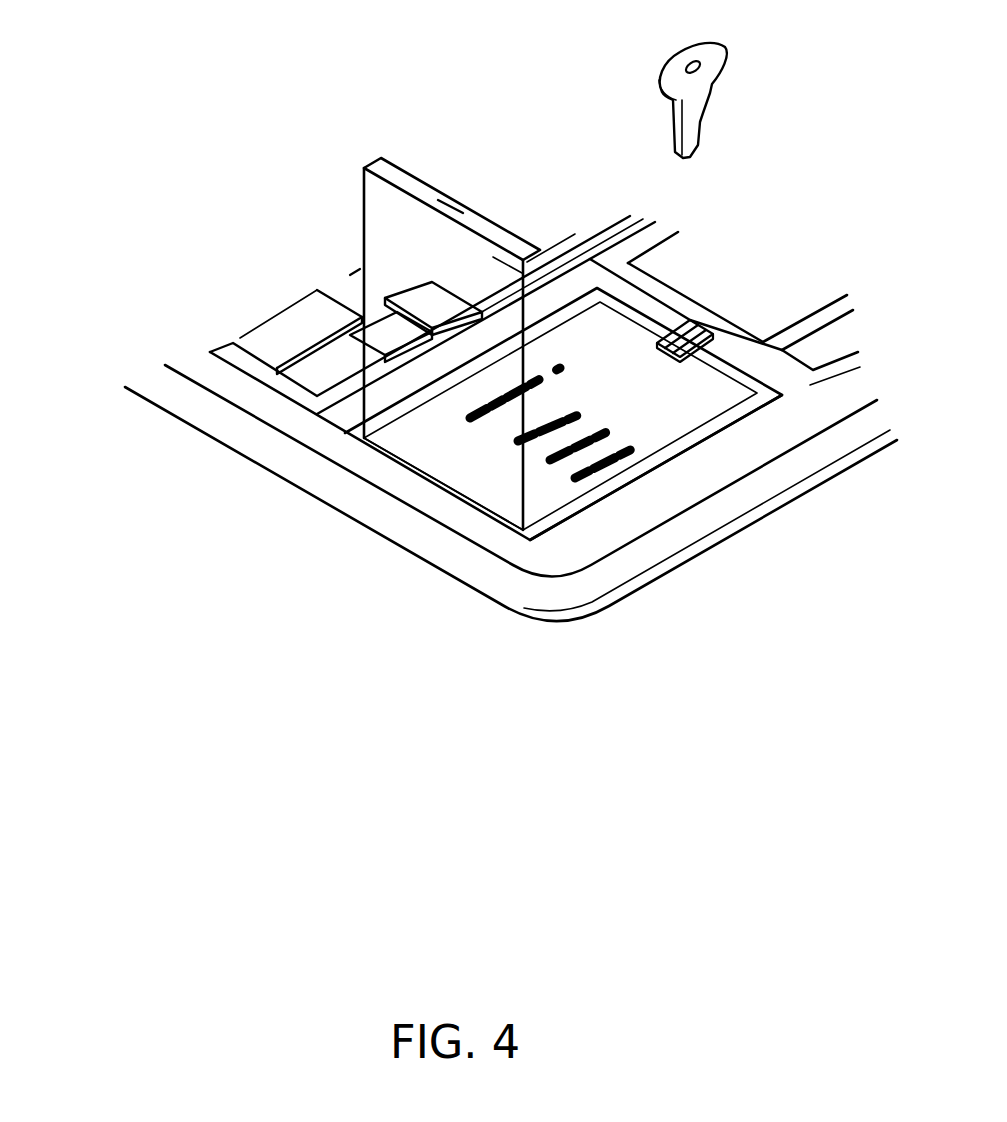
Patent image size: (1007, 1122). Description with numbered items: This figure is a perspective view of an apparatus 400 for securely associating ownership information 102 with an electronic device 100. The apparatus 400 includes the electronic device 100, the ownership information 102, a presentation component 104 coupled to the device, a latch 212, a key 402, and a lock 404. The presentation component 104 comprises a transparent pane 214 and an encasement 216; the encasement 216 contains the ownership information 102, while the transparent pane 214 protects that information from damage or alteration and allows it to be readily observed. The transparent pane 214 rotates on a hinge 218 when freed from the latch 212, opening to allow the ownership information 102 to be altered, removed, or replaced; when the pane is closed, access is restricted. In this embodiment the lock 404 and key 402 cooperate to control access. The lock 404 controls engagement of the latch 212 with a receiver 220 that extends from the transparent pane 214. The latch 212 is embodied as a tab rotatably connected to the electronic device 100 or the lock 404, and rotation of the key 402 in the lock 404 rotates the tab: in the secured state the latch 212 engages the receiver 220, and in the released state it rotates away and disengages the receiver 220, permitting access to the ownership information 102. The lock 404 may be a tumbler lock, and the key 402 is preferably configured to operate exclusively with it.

The apparatus 400 is at (173, 92).
The electronic device 100 is at (176, 438).
The ownership information 102 is at (681, 400).
The presentation component 104 is at (428, 492).
The latch 212 is at (700, 351).
The transparent pane 214 is at (420, 264).
The encasement 216 is at (688, 438).
The hinge 218 is at (527, 535).
The receiver 220 is at (463, 212).
The key 402 is at (712, 101).
The lock 404 is at (692, 334).